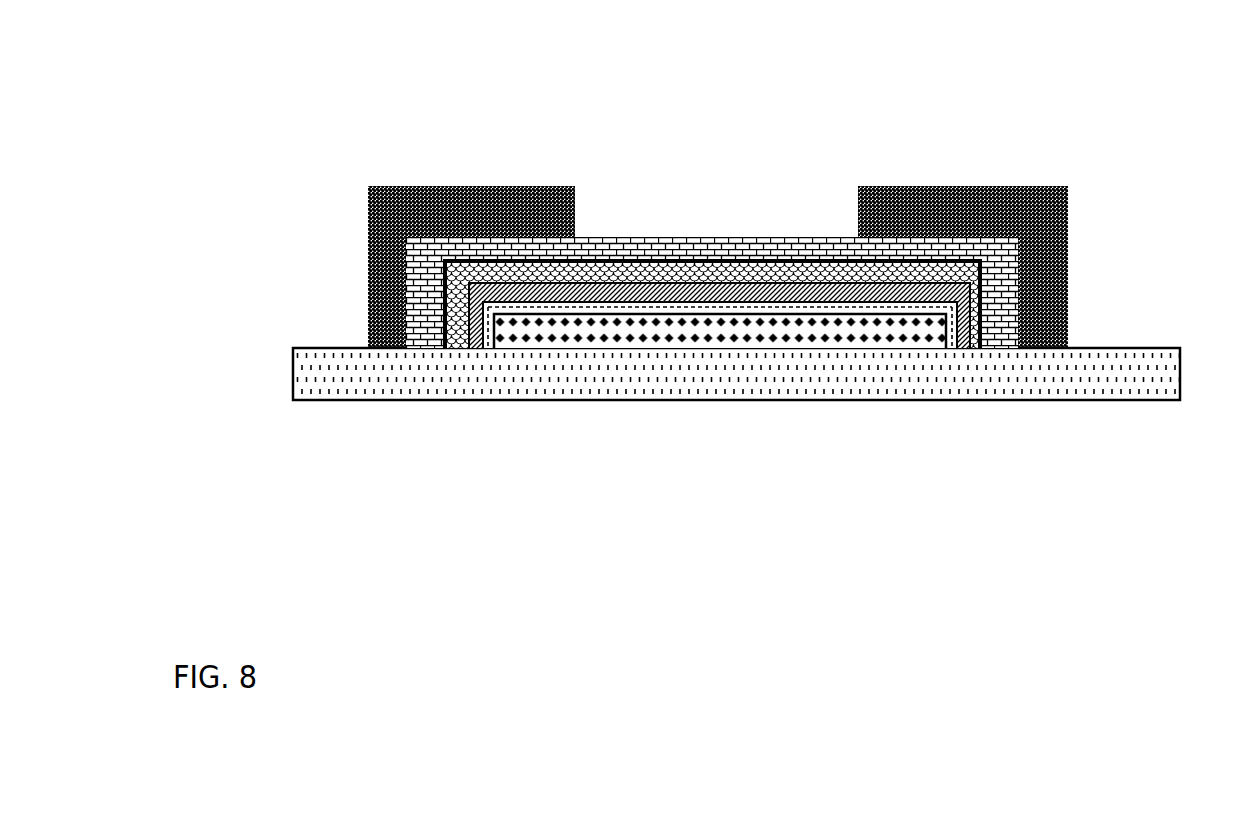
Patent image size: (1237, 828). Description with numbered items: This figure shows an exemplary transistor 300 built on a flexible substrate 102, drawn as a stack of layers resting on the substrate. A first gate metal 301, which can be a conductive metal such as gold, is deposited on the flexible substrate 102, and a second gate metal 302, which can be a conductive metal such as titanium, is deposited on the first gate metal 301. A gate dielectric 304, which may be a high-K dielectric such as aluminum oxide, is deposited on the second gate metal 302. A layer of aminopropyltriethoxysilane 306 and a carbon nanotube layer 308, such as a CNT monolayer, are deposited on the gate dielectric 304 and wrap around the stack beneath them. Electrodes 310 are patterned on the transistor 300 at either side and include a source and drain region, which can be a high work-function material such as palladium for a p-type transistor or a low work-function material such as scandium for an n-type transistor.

The transistor 300 is at (702, 311).
The flexible substrate 102 is at (318, 347).
The electrodes 310 is at (418, 186).
The carbon nanotube (CNT) layer 308 is at (882, 266).
The layer of aminopropyltriethoxysilane (APTES) 306 is at (818, 286).
The gate dielectric 304 is at (744, 303).
The second gate metal 302 is at (657, 317).
The first gate metal 301 is at (572, 352).